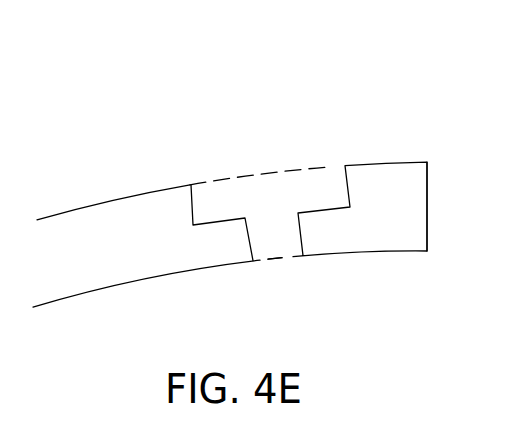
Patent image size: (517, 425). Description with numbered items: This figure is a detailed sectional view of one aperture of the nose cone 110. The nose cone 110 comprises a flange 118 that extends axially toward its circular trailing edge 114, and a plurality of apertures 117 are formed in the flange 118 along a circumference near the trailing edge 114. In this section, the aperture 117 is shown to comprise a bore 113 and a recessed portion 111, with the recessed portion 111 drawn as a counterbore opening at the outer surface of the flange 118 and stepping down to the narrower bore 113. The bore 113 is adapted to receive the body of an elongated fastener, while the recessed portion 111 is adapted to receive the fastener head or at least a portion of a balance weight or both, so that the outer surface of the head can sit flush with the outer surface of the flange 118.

The nose cone 110 is at (78, 95).
The recessed portion 111 is at (318, 185).
The bore 113 is at (279, 266).
The trailing edge 114 is at (427, 203).
The apertures 117 is at (229, 135).
The flange 118 is at (87, 219).